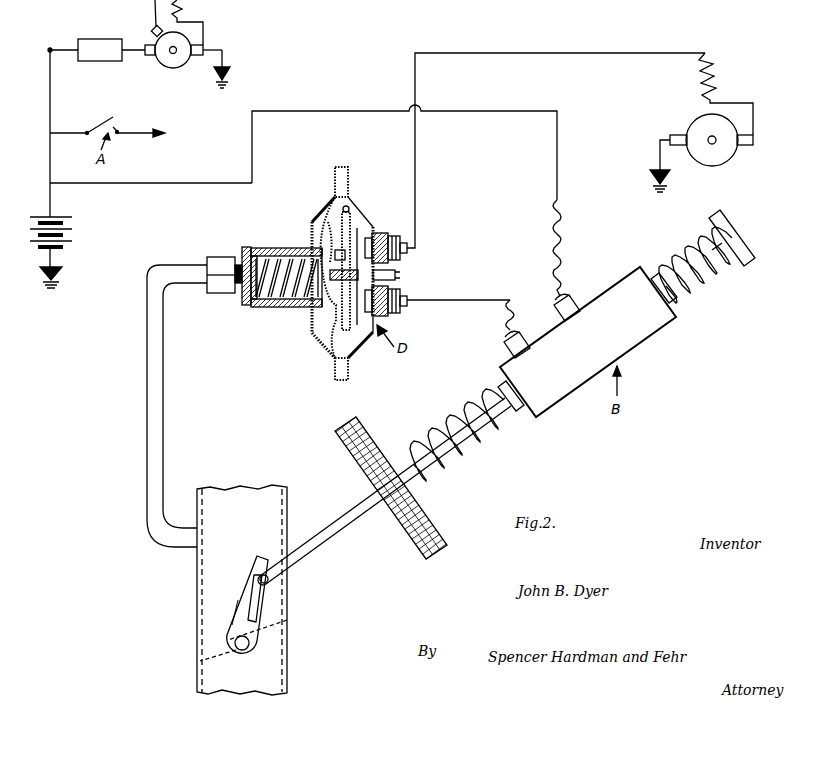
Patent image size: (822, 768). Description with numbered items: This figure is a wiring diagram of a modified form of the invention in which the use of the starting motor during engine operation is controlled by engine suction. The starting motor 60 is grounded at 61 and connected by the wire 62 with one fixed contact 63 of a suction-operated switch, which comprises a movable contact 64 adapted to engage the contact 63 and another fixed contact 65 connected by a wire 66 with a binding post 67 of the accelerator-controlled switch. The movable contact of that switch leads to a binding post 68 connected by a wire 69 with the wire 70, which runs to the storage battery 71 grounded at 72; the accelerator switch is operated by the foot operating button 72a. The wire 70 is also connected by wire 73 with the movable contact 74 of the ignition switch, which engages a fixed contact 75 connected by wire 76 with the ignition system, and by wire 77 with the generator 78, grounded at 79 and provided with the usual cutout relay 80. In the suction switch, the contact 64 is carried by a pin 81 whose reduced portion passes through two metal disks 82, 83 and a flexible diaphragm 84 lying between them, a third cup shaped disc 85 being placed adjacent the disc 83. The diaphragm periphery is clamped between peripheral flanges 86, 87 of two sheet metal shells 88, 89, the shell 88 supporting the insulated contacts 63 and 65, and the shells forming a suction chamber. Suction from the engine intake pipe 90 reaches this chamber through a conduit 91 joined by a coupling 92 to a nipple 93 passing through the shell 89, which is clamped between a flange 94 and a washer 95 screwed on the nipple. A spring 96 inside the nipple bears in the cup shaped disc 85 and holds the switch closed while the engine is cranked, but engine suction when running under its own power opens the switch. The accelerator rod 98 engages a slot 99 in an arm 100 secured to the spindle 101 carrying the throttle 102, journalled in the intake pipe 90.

The starting motor 60 is at (723, 161).
The ground connection 61 is at (658, 162).
The wire 62 is at (417, 207).
The fixed contact 63 is at (404, 252).
The movable contact 64 is at (396, 280).
The fixed contact 65 is at (404, 305).
The wire 66 is at (483, 300).
The binding post 67 is at (503, 343).
The binding post 68 is at (561, 296).
The wire 69 is at (168, 185).
The wire 70 is at (48, 173).
The storage battery 71 is at (70, 237).
The ground connection 72 is at (56, 268).
The foot operating button 72a is at (743, 246).
The wire 73 is at (70, 135).
The movable contact 74 is at (100, 125).
The fixed contact 75 is at (118, 130).
The wire 76 is at (140, 135).
The wire 77 is at (51, 46).
The generator 78 is at (178, 66).
The ground connection 79 is at (226, 66).
The cutout relay 80 is at (104, 38).
The pin 81 is at (350, 258).
The metal disk 82 is at (358, 240).
The metal disk 83 is at (328, 222).
The flexible diaphragm 84 is at (337, 212).
The cup shaped disc 85 is at (318, 333).
The peripheral flange 86 is at (350, 368).
The peripheral flange 87 is at (340, 380).
The sheet metal shell 88 is at (358, 348).
The sheet metal shell 89 is at (332, 352).
The engine intake pipe 90 is at (272, 509).
The conduit 91 is at (164, 428).
The coupling 92 is at (239, 294).
The nipple 93 is at (297, 308).
The flange 94 is at (312, 233).
The washer 95 is at (302, 243).
The spring 96 is at (262, 310).
The accelerator rod 98 is at (356, 517).
The slot 99 is at (260, 607).
The arm 100 is at (238, 618).
The spindle 101 is at (248, 645).
The throttle 102 is at (278, 632).